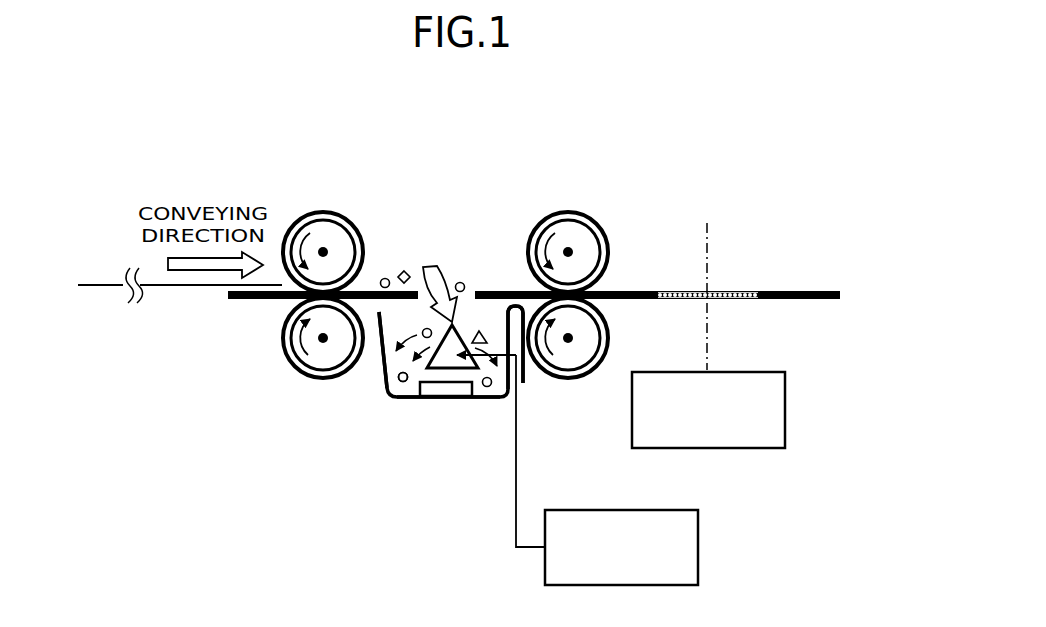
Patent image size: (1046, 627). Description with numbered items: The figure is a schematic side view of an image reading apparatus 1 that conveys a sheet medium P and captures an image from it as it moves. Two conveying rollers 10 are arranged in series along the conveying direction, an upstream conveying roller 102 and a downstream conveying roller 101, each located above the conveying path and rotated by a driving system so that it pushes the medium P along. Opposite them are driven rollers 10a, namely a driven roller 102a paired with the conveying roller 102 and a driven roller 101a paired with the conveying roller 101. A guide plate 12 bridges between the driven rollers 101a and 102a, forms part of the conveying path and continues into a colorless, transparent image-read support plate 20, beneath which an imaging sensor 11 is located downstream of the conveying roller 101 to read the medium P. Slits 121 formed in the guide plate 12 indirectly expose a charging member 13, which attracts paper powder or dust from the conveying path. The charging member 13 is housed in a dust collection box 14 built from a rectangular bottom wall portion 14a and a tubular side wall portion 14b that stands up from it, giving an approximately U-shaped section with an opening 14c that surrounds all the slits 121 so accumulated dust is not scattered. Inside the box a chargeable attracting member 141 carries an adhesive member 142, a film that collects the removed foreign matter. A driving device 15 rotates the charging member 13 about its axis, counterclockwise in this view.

The image reading apparatus 1 is at (760, 130).
The sheet medium P is at (95, 285).
The conveying rollers 10 is at (445, 226).
The driven rollers 10a is at (439, 380).
The imaging sensor 11 is at (737, 372).
The guide plate 12 is at (638, 290).
The charging member 13 is at (453, 365).
The dust collection box 14 is at (450, 363).
The bottom wall portion 14a is at (405, 398).
The side wall portion 14b is at (383, 374).
The opening 14c is at (523, 383).
The driving device 15 is at (648, 510).
The image-read support plate 20 is at (741, 290).
The conveying roller 101 is at (562, 212).
The driven roller 101a is at (573, 377).
The conveying roller 102 is at (317, 212).
The driven roller 102a is at (295, 370).
The slits 121 is at (423, 292).
The attracting member 141 is at (469, 397).
The adhesive member 142 is at (412, 381).